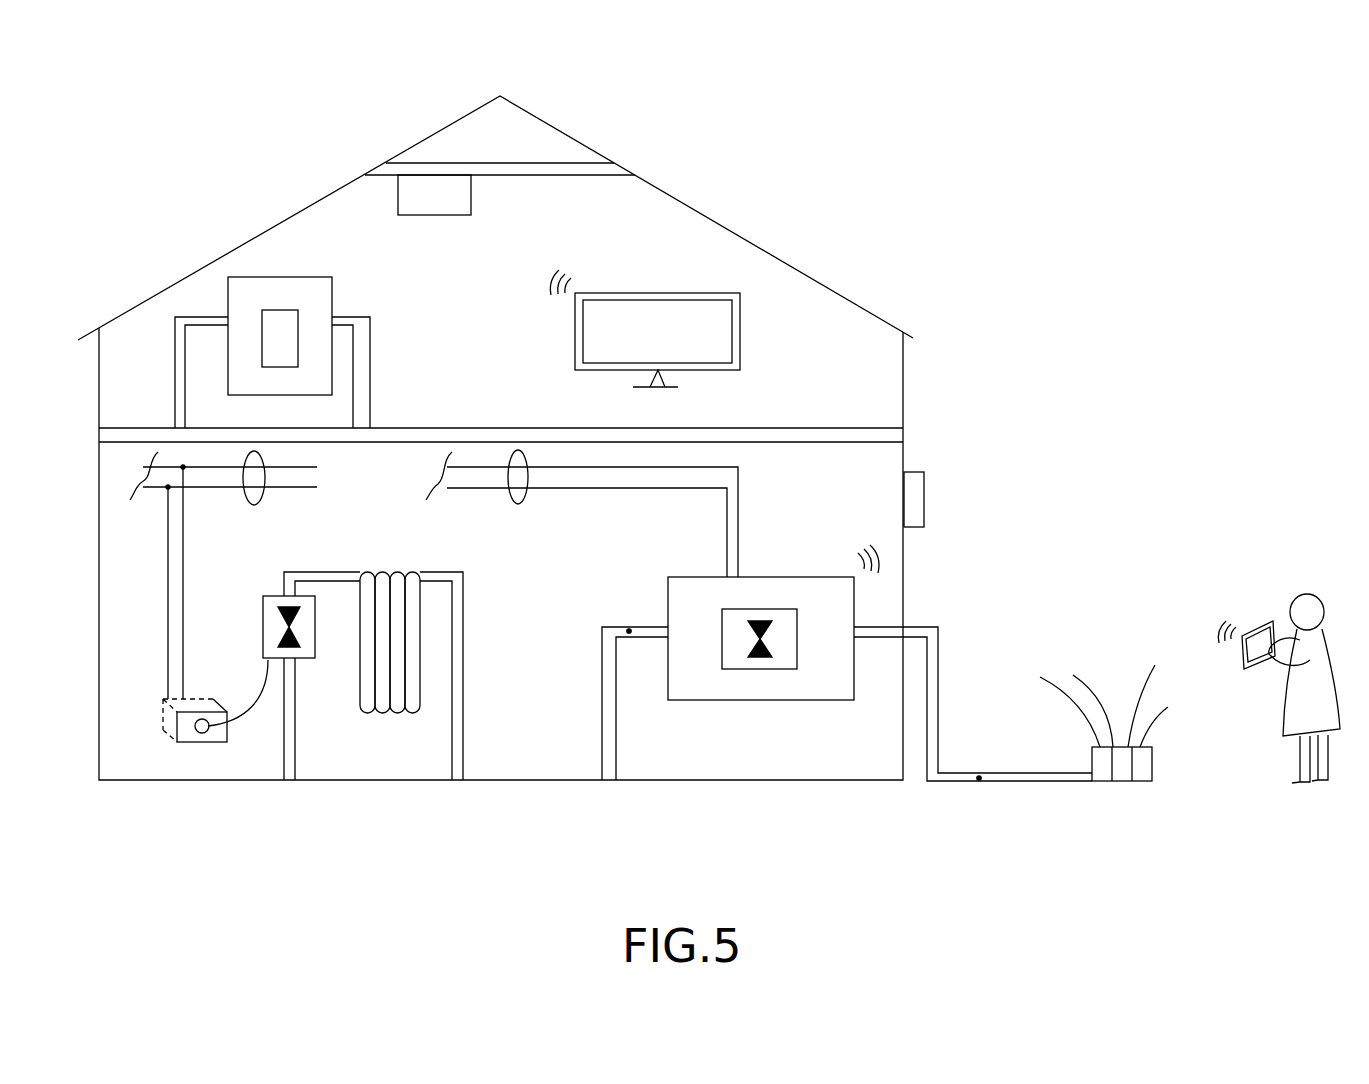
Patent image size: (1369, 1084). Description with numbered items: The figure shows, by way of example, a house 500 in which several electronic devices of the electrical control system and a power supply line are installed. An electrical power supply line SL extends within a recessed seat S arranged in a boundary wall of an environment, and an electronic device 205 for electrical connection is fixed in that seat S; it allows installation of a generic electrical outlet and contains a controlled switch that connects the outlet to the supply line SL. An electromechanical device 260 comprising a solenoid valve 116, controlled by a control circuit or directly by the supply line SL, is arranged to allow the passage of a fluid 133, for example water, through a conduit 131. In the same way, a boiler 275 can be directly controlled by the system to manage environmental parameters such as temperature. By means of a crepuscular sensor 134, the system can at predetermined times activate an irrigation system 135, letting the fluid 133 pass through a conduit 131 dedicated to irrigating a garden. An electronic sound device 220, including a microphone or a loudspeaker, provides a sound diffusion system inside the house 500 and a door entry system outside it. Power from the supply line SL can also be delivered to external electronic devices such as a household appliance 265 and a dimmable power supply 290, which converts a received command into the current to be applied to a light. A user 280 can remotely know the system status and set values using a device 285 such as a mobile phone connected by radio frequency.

The house 500 is at (745, 165).
The dimmable power supply 290 is at (395, 193).
The boiler 275 is at (335, 296).
The electronic device 265 is at (744, 334).
The electronic sound device 220 is at (930, 499).
The conduit 131 is at (372, 352).
The fluid 133 is at (355, 401).
The crepuscular sensor 134 is at (389, 722).
The solenoid valve 116 is at (260, 636).
The electromechanical device 260 is at (792, 573).
The electronic device for electrical connection 205 is at (193, 745).
The seat S is at (163, 705).
The electrical power supply line SL is at (387, 495).
The irrigation system 135 is at (1123, 790).
The device 285 is at (1257, 615).
The user 280 is at (1311, 592).